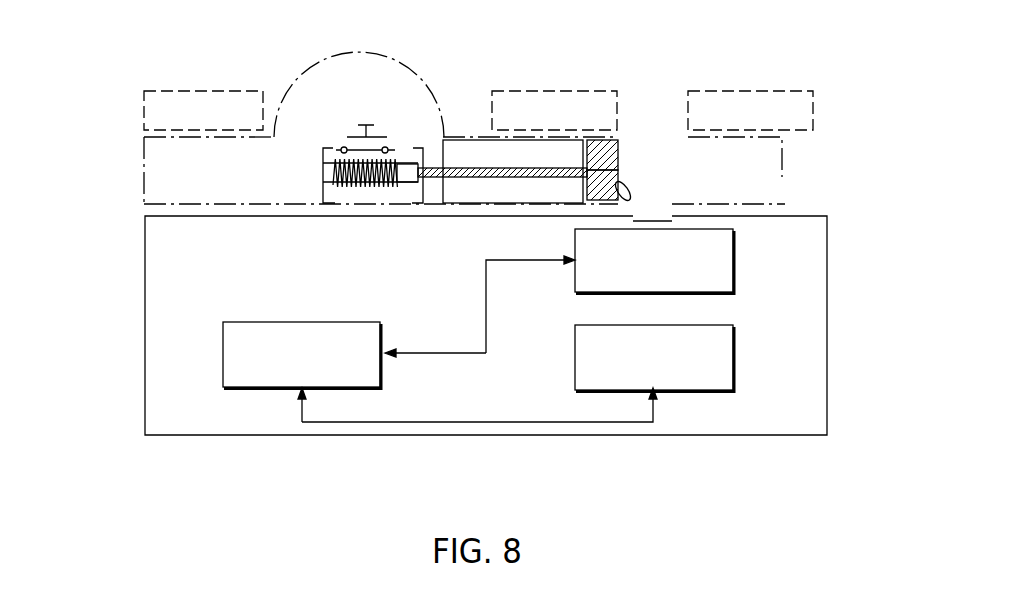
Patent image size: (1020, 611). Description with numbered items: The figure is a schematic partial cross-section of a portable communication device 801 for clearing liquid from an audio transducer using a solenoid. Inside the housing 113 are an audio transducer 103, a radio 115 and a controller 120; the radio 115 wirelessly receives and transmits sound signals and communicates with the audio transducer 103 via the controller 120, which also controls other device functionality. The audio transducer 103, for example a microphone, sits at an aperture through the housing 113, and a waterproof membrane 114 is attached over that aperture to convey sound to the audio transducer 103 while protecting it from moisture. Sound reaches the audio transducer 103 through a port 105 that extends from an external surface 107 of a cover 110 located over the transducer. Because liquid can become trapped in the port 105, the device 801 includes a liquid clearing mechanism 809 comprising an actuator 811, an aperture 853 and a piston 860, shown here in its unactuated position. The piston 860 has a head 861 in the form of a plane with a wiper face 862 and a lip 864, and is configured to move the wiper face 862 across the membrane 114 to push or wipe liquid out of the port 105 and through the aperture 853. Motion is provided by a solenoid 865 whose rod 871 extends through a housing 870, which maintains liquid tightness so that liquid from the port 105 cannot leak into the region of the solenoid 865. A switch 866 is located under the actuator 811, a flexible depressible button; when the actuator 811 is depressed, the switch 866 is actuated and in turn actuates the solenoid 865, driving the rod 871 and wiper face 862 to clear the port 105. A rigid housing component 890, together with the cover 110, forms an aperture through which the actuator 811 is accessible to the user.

The device 801 is at (451, 358).
The housing 113 is at (145, 326).
The controller 120 is at (223, 353).
The audio transducer 103 is at (746, 262).
The radio 115 is at (735, 357).
The liquid clearing mechanism 809 is at (134, 171).
The actuator 811 is at (303, 72).
The rigid housing component 890 is at (144, 106).
The cover 110 is at (555, 90).
The external surface 107 is at (601, 73).
The port 105 is at (653, 97).
The membrane 114 is at (653, 202).
The aperture 853 is at (788, 192).
The switch 866 is at (365, 124).
The housing 870 is at (443, 150).
The solenoid 865 is at (323, 170).
The rod 871 is at (483, 166).
The piston 860 is at (517, 126).
The head 861 is at (588, 164).
The wiper face 862 is at (587, 191).
The lip 864 is at (630, 184).